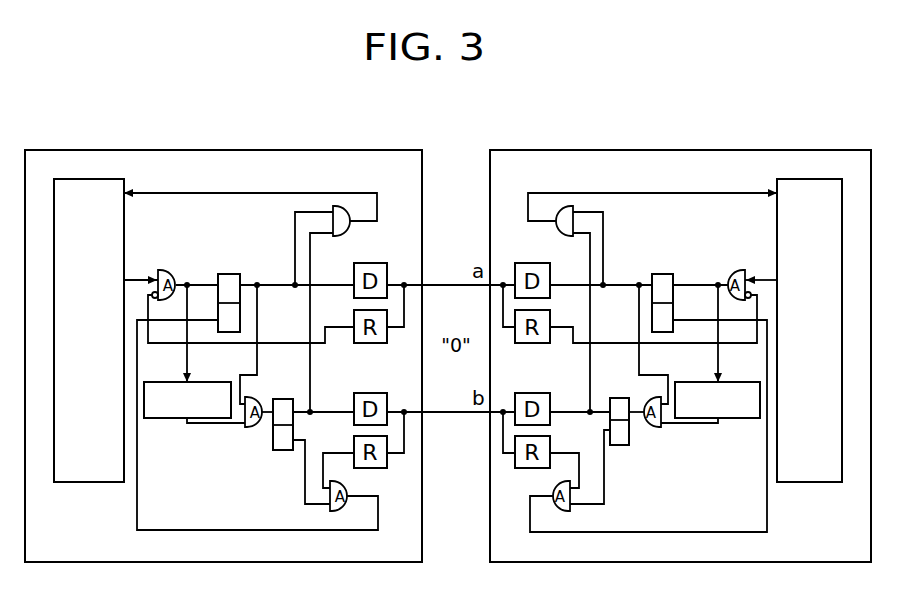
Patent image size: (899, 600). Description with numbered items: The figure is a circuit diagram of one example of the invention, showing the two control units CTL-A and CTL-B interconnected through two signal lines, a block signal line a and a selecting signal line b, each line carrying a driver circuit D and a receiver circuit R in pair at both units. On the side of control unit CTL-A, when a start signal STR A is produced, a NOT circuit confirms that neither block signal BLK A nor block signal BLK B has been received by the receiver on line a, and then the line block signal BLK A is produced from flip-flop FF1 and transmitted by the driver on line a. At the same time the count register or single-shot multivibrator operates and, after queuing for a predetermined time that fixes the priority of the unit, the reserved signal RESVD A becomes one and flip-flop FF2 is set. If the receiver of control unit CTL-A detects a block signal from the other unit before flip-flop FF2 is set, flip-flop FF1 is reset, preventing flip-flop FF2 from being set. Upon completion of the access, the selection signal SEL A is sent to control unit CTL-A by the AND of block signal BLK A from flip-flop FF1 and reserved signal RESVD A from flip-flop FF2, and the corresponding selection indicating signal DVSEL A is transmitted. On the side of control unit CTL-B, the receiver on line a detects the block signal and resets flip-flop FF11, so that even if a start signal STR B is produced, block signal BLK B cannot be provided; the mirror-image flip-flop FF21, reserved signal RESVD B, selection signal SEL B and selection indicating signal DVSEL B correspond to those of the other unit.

The control unit A CTL-A is at (223, 356).
The control unit B CTL-B is at (680, 356).
The selection signal A SEL A is at (89, 330).
The selection signal B SEL B is at (809, 330).
The start signal A STR A is at (111, 293).
The start signal B STR B is at (790, 293).
The selection indicating signal A DVSEL A is at (387, 185).
The selection indicating signal B DVSEL B is at (524, 210).
The block signal A BLK A is at (272, 283).
The block signal B BLK B is at (624, 283).
The flip-flop FF1 is at (229, 274).
The flip-flop FF2 is at (283, 399).
The flip-flop FF11 is at (667, 274).
The flip-flop FF21 is at (620, 398).
The reserved signal A RESVD A is at (325, 413).
The reserved signal B RESVD B is at (577, 413).